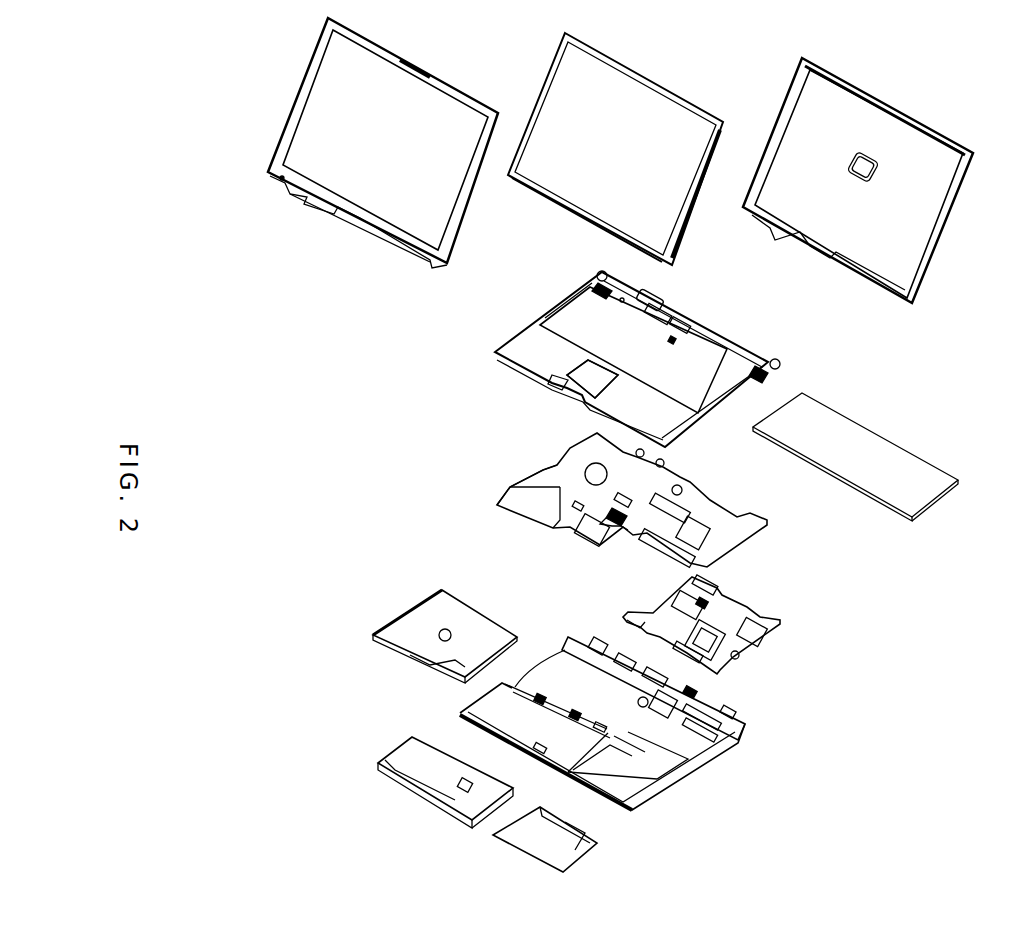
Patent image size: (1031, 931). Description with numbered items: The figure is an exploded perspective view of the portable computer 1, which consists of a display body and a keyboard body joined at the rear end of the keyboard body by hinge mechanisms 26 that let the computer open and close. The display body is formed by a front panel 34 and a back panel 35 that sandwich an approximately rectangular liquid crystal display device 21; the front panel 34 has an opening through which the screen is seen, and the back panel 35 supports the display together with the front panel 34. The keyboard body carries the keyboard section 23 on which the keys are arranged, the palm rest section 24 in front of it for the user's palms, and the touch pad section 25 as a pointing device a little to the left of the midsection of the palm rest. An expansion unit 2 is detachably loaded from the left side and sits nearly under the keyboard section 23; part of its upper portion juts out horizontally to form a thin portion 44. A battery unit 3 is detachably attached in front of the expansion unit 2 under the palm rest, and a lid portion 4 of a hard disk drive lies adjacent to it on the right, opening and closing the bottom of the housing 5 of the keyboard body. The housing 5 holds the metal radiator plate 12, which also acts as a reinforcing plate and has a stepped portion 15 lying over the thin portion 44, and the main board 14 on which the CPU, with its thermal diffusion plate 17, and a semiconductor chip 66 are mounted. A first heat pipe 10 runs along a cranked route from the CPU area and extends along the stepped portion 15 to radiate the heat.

The portable computer 1 is at (874, 735).
The expansion unit 2 is at (412, 650).
The battery unit 3 is at (405, 768).
The lid portion 4 is at (548, 855).
The housing 5 is at (702, 750).
The first heat pipe 10 is at (620, 527).
The radiator plate 12 is at (718, 513).
The main board 14 is at (750, 614).
The stepped portion 15 is at (558, 486).
The thermal diffusion plate 17 is at (722, 591).
The liquid crystal display device 21 is at (653, 106).
The keyboard section 23 is at (945, 478).
The palm rest section 24 is at (525, 338).
The touch pad section 25 is at (585, 375).
The hinge mechanisms 26 is at (298, 196).
The front panel 34 is at (290, 118).
The back panel 35 is at (930, 152).
The thin portion 44 is at (428, 661).
The semiconductor chip 66 is at (740, 650).